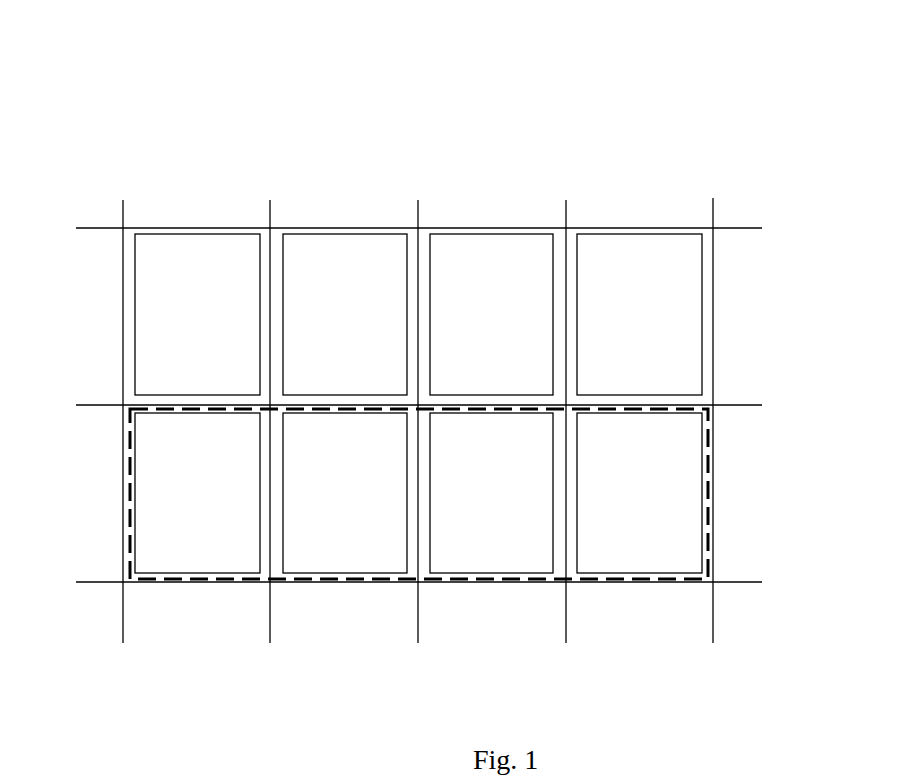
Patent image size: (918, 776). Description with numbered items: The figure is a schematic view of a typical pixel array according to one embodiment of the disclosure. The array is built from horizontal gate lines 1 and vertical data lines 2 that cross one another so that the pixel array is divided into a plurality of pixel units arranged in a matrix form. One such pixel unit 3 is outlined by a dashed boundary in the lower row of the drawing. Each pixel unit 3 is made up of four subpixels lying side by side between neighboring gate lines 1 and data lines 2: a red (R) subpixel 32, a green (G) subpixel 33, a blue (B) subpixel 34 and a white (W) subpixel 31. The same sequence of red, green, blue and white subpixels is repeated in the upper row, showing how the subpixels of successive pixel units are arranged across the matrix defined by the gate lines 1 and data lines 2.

The gate line 1 is at (731, 228).
The data line 2 is at (123, 200).
The pixel unit 3 is at (708, 432).
The white (W) subpixel 31 is at (623, 257).
The red (R) subpixel 32 is at (198, 257).
The green (G) subpixel 33 is at (333, 257).
The blue (B) subpixel 34 is at (494, 257).